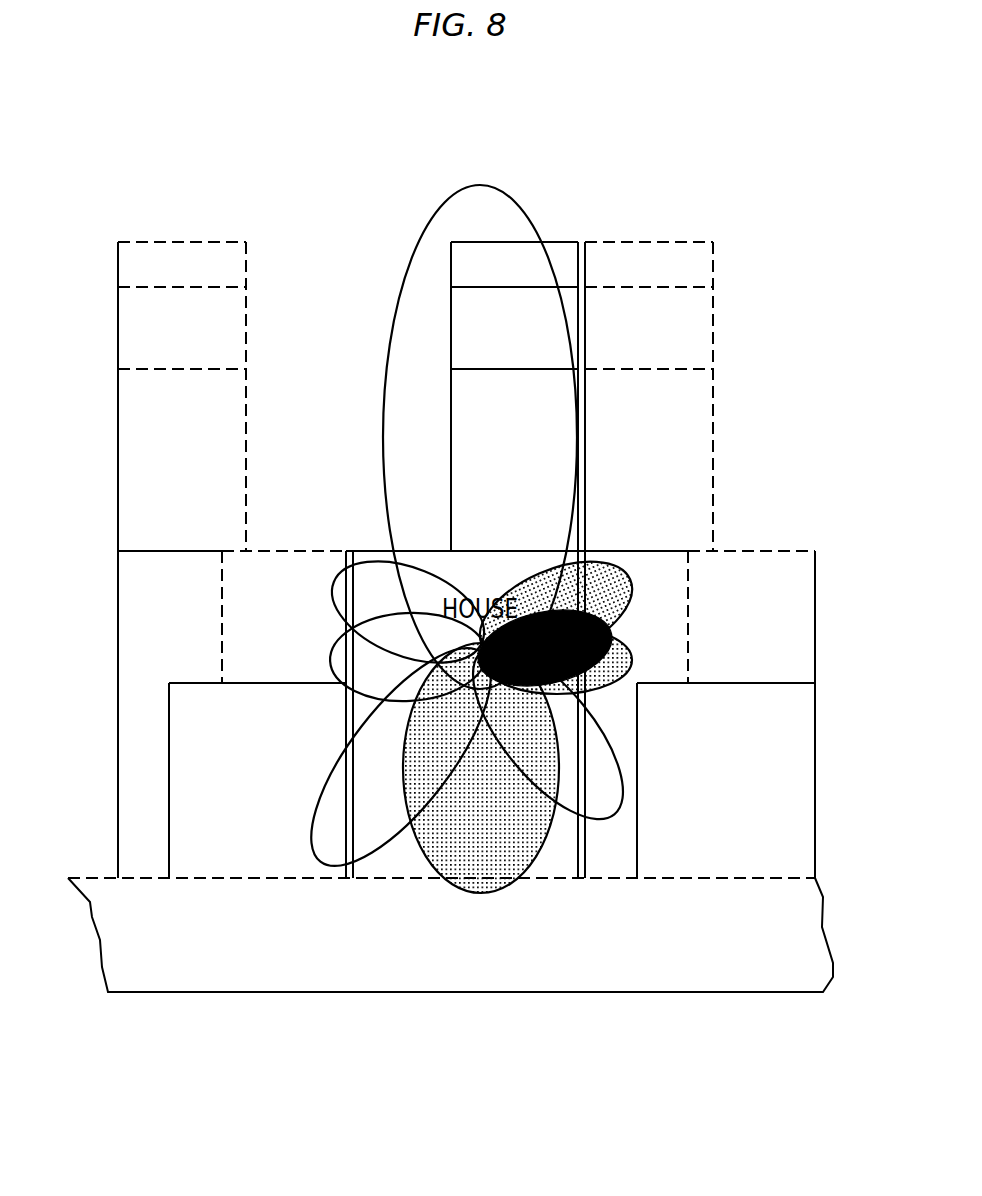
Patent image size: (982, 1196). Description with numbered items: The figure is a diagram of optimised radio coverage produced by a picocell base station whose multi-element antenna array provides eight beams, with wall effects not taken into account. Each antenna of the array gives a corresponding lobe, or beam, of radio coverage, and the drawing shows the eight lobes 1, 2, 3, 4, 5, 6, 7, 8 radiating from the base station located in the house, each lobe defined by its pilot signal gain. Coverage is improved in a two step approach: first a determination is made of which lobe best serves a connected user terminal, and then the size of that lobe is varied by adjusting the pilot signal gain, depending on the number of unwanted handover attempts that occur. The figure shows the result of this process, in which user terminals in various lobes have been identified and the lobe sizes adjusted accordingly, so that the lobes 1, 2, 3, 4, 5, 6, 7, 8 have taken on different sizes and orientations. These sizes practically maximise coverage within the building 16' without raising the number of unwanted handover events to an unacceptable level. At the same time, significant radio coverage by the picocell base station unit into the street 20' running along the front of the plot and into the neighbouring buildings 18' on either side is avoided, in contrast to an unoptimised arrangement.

The lobe 1 is at (409, 272).
The lobe 2 is at (334, 597).
The lobe 3 is at (336, 655).
The lobe 4 is at (310, 822).
The lobe 5 is at (472, 893).
The lobe 6 is at (620, 772).
The lobe 7 is at (630, 652).
The lobe 8 is at (630, 598).
The building 16' is at (538, 538).
The neighbouring buildings 18' is at (435, 538).
The street 20' is at (435, 949).